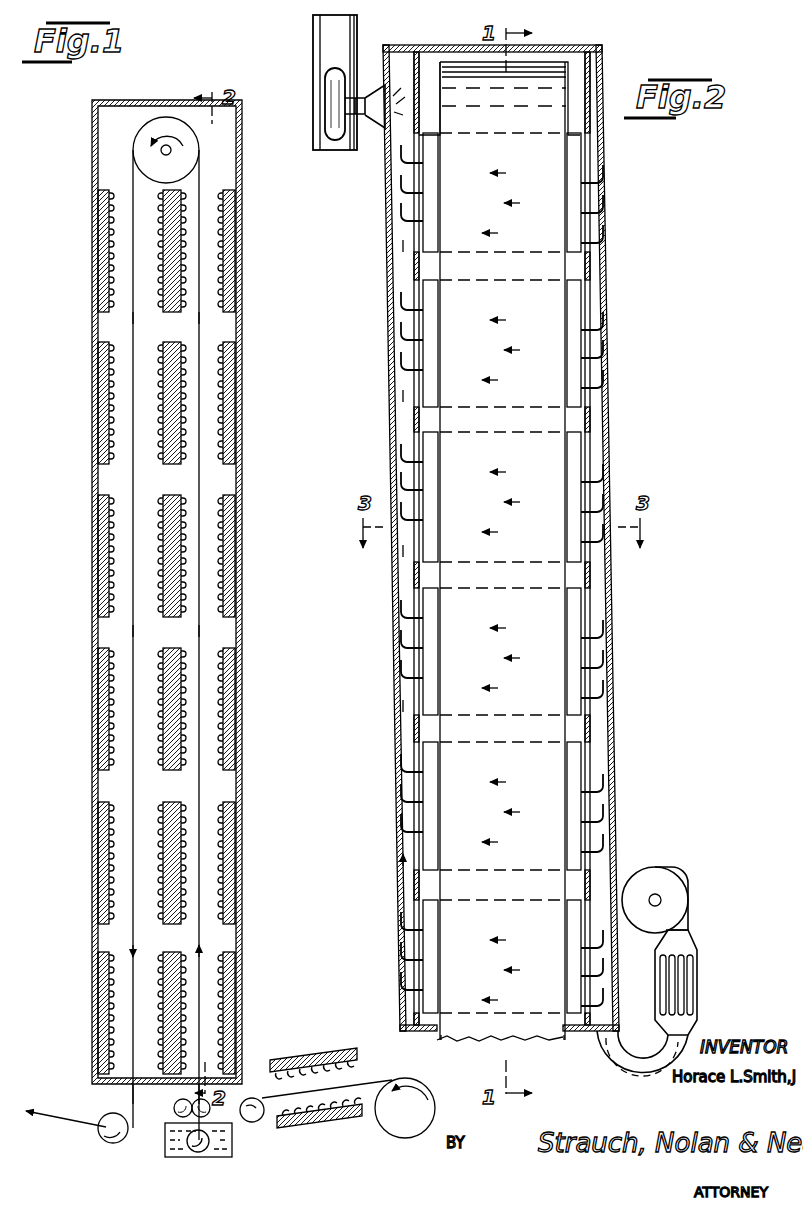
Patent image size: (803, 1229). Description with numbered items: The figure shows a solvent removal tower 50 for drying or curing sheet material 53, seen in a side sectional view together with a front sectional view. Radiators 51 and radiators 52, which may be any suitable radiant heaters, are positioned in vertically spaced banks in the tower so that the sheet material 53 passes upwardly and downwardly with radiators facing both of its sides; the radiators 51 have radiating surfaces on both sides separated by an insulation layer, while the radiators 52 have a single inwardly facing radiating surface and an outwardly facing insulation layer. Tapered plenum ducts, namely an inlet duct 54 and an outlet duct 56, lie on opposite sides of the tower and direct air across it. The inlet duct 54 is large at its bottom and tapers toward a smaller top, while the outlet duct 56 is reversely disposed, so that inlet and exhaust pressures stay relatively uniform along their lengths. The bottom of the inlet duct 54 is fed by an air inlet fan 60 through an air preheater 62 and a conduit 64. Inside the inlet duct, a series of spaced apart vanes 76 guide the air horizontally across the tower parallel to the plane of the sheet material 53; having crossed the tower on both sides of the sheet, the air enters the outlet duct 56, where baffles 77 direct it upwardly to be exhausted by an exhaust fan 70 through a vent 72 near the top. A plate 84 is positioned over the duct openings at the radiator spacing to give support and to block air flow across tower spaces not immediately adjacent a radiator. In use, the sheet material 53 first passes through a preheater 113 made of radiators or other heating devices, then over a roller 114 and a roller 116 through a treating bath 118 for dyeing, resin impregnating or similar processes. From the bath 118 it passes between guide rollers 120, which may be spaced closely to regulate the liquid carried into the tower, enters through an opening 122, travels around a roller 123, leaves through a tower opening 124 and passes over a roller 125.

In FIG. 1, the solvent removal tower 50 is at (250, 387).
In FIG. 2, the solvent removal tower 50 is at (360, 392).
In FIG. 1, the radiators 51 is at (170, 347).
In FIG. 2, the radiators 51 is at (575, 308).
In FIG. 1, the radiators 52 is at (100, 252).
In FIG. 1, the sheet material 53 is at (198, 794).
In FIG. 2, the sheet material 53 is at (517, 1042).
In FIG. 2, the inlet duct 54 is at (618, 688).
In FIG. 2, the outlet duct 56 is at (388, 374).
In FIG. 2, the air inlet fan 60 is at (654, 886).
In FIG. 2, the air preheater 62 is at (698, 996).
In FIG. 2, the conduit 64 is at (608, 1062).
In FIG. 2, the exhaust fan 70 is at (324, 106).
In FIG. 2, the vent 72 is at (324, 48).
In FIG. 2, the vanes 76 is at (604, 851).
In FIG. 2, the baffles 77 is at (402, 474).
In FIG. 2, the plate 84 is at (414, 417).
In FIG. 1, the preheater 113 is at (312, 1054).
In FIG. 1, the roller 114 is at (249, 1098).
In FIG. 1, the roller 116 is at (204, 1148).
In FIG. 1, the treating bath 118 is at (232, 1142).
In FIG. 1, the guide rollers 120 is at (177, 1115).
In FIG. 1, the opening 122 is at (199, 1088).
In FIG. 1, the roller 123 is at (144, 142).
In FIG. 1, the tower opening 124 is at (133, 1089).
In FIG. 1, the roller 125 is at (104, 1140).